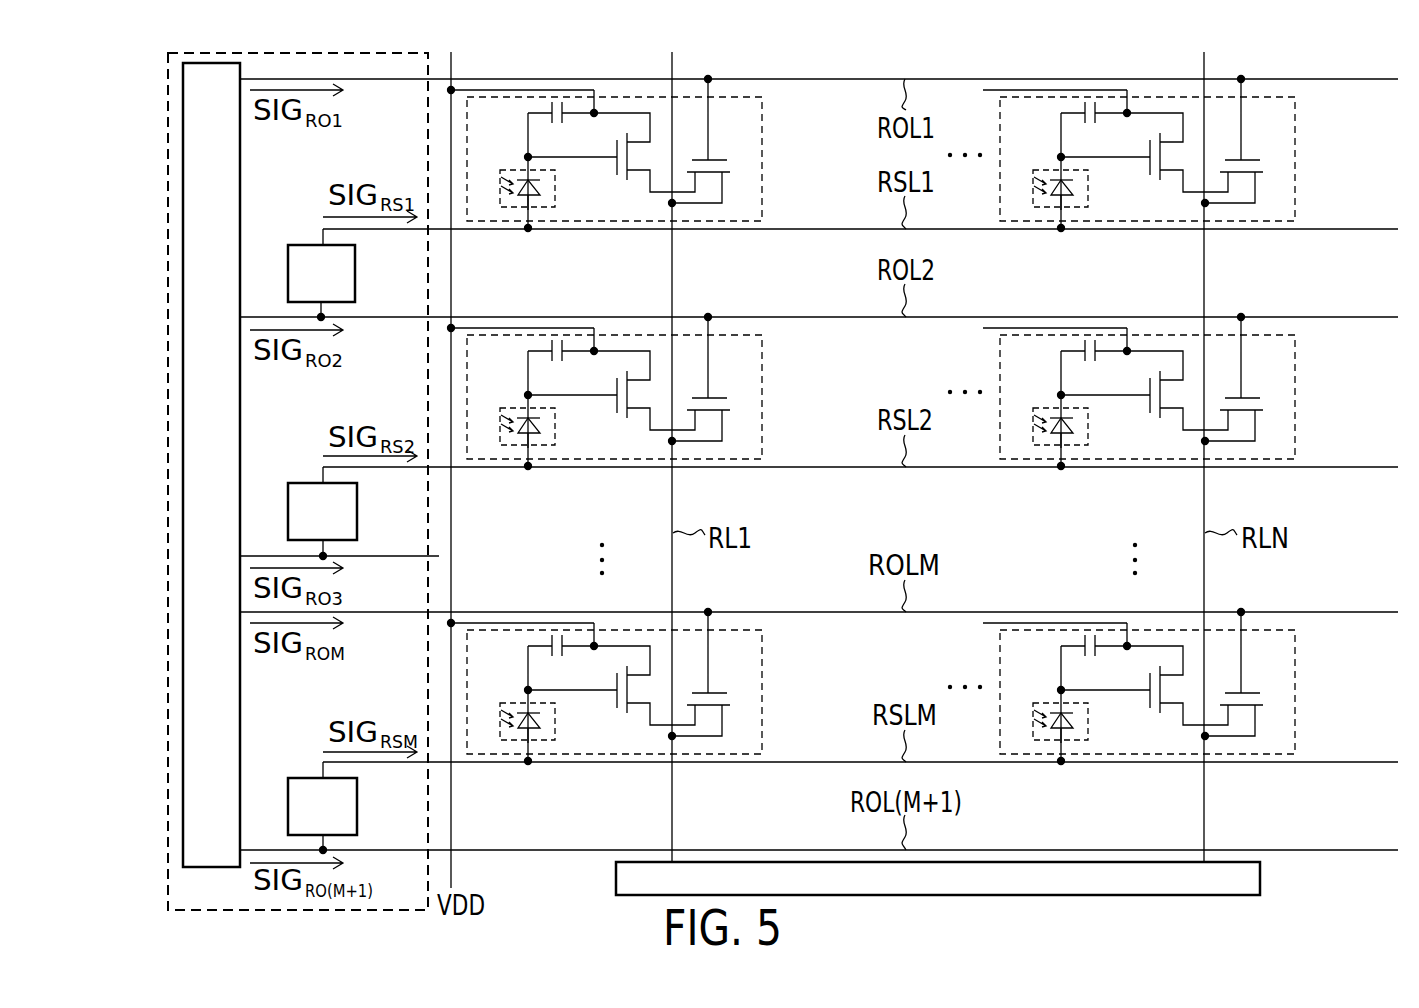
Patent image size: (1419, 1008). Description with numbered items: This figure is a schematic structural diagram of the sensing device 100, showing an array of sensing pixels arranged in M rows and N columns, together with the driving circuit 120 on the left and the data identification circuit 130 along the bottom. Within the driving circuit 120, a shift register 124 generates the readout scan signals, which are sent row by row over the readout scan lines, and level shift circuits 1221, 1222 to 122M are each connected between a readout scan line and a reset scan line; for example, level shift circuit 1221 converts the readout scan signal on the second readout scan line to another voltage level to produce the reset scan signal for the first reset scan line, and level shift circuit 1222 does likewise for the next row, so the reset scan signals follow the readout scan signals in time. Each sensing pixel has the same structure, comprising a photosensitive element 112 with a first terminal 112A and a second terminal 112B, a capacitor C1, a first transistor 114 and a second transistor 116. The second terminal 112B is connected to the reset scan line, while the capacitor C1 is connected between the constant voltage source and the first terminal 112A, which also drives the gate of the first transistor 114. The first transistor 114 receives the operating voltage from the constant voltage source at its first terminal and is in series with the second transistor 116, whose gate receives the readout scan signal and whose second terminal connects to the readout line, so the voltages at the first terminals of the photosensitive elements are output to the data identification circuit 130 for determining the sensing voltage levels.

The sensing device 100 is at (113, 78).
The photosensitive element 112 is at (785, 431).
The first terminal of photosensitive element 112A is at (820, 490).
The second terminal of photosensitive element 112B is at (770, 503).
The first transistor 114 is at (874, 443).
The second transistor 116 is at (986, 411).
The capacitor C1 is at (847, 394).
The driving circuit 120 is at (168, 272).
The level shift circuit 1221 is at (344, 285).
The level shift circuit 1222 is at (345, 523).
The level shift circuit 122M is at (351, 818).
The shift register 124 is at (228, 479).
The data identification circuit 130 is at (1261, 876).